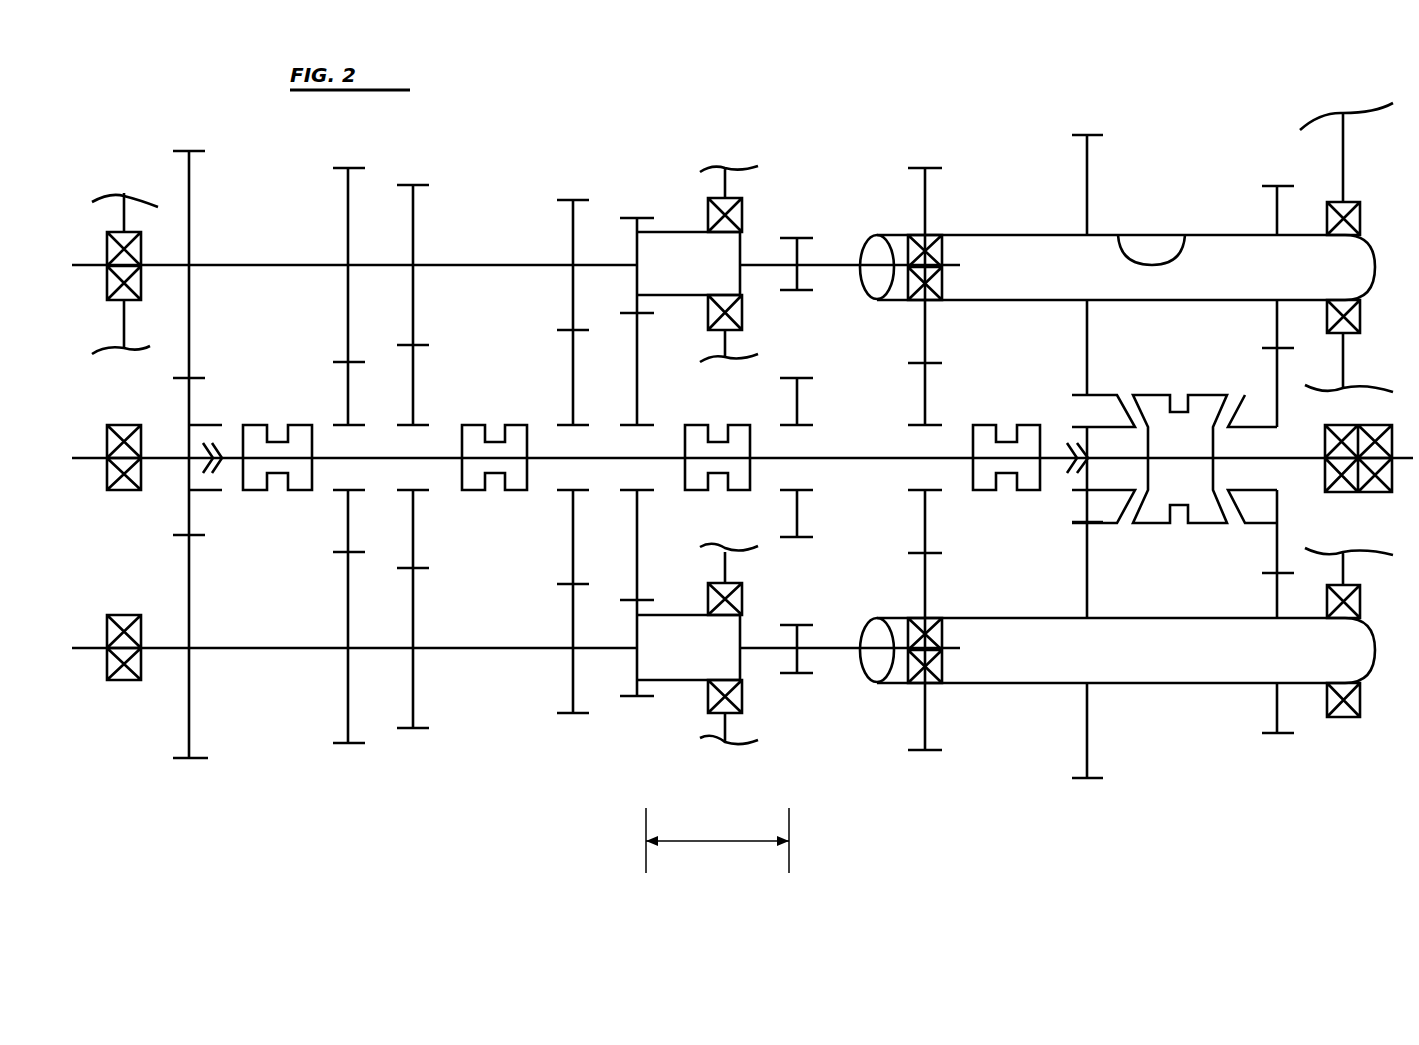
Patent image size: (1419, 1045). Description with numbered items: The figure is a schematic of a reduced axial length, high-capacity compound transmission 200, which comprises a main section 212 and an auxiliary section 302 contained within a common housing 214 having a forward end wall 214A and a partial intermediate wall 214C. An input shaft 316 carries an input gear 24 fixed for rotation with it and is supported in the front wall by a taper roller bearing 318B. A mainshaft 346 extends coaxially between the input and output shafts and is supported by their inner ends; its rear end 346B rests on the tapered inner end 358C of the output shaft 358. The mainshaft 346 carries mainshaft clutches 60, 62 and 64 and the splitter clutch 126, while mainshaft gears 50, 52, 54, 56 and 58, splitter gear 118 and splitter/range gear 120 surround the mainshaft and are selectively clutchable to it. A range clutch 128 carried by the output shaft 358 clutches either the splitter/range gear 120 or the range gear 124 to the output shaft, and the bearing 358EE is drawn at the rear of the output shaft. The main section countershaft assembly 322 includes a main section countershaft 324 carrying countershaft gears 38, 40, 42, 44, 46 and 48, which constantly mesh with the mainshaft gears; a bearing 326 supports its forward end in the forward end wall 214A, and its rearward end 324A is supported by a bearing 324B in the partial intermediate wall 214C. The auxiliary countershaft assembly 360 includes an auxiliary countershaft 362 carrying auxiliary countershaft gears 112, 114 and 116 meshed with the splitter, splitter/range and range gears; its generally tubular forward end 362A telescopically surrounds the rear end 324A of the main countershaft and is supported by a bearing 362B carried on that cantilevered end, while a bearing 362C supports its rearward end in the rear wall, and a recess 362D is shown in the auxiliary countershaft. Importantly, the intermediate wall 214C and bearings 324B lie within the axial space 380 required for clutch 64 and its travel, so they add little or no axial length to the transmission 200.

The high-capacity compound transmission 200 is at (803, 138).
The main section 212 is at (359, 805).
The auxiliary section 302 is at (1150, 843).
The axial space 380 is at (725, 855).
The common housing 214 is at (1345, 170).
The forward end wall 214A is at (138, 335).
The partial intermediate wall 214C is at (712, 192).
The input shaft 316 is at (165, 460).
The taper roller bearing 318B is at (123, 497).
The bearing 326 is at (141, 663).
The main section countershaft assembly 322 is at (478, 258).
The main section countershaft 324 is at (318, 262).
The rearward end of main section countershaft 324A is at (950, 650).
The bearing 324B is at (705, 600).
The input gear 24 is at (191, 513).
The countershaft gear 38 is at (191, 720).
The countershaft gear 40 is at (346, 305).
The countershaft gear 42 is at (415, 596).
The countershaft gear 44 is at (571, 598).
The countershaft gear 46 is at (632, 242).
The countershaft gear 48 is at (800, 258).
The mainshaft gear 50 is at (346, 505).
The mainshaft gear 52 is at (415, 522).
The mainshaft gear 54 is at (571, 513).
The mainshaft gear 56 is at (639, 347).
The mainshaft gear 58 is at (797, 416).
The mainshaft clutch 60 is at (253, 432).
The mainshaft clutch 62 is at (470, 432).
The mainshaft clutch 64 is at (695, 448).
The mainshaft 346 is at (540, 458).
The rear end of mainshaft 346B is at (1048, 440).
The auxiliary countershaft assembly 360 is at (1045, 312).
The auxiliary countershaft 362 is at (990, 253).
The forward end of auxiliary countershaft 362A is at (882, 282).
The bearing 362B is at (945, 666).
The bearing 362C is at (1343, 717).
The countershaft recess 362D is at (1185, 258).
The auxiliary countershaft gear 112 is at (923, 715).
The auxiliary countershaft gear 114 is at (1089, 708).
The auxiliary countershaft gear 116 is at (1277, 700).
The splitter gear 118 is at (920, 520).
The splitter/range gear 120 is at (1083, 508).
The range gear 124 is at (1273, 539).
The splitter clutch 126 is at (988, 483).
The range clutch 128 is at (1157, 507).
The output shaft 358 is at (1280, 460).
The inner end of output shaft 358C is at (1098, 445).
The output shaft bearing 358EE is at (1392, 477).